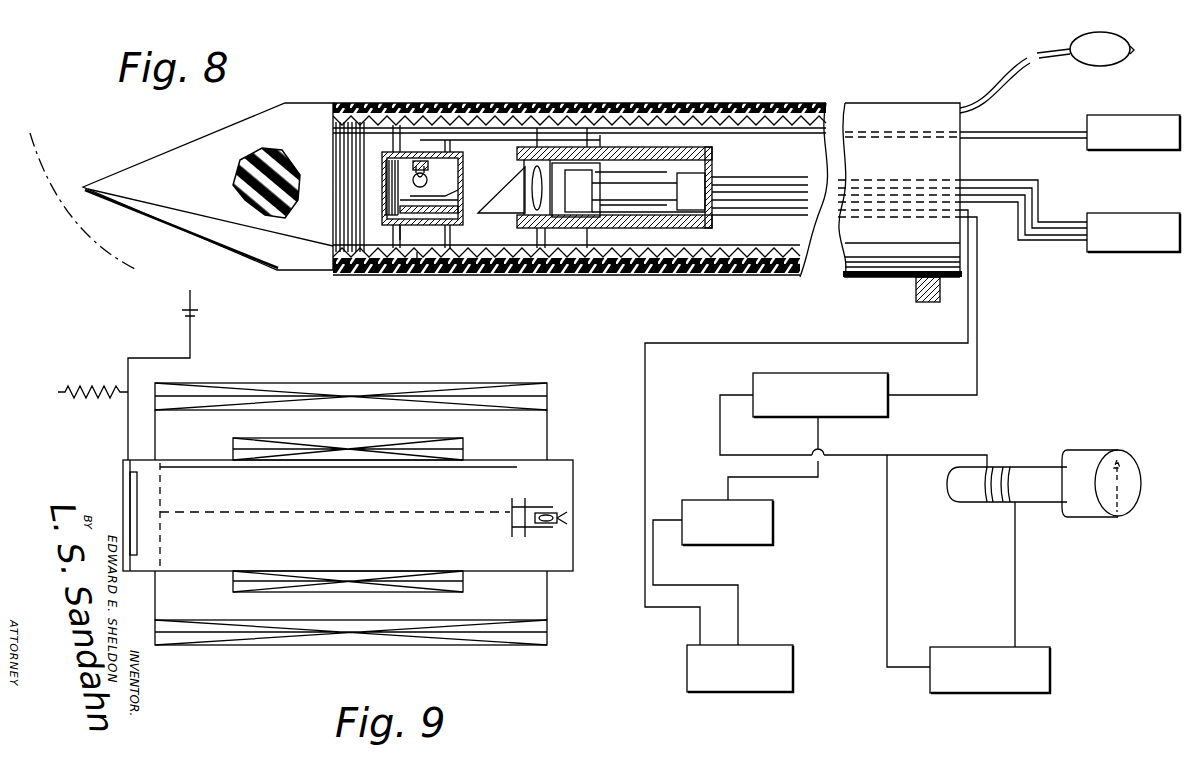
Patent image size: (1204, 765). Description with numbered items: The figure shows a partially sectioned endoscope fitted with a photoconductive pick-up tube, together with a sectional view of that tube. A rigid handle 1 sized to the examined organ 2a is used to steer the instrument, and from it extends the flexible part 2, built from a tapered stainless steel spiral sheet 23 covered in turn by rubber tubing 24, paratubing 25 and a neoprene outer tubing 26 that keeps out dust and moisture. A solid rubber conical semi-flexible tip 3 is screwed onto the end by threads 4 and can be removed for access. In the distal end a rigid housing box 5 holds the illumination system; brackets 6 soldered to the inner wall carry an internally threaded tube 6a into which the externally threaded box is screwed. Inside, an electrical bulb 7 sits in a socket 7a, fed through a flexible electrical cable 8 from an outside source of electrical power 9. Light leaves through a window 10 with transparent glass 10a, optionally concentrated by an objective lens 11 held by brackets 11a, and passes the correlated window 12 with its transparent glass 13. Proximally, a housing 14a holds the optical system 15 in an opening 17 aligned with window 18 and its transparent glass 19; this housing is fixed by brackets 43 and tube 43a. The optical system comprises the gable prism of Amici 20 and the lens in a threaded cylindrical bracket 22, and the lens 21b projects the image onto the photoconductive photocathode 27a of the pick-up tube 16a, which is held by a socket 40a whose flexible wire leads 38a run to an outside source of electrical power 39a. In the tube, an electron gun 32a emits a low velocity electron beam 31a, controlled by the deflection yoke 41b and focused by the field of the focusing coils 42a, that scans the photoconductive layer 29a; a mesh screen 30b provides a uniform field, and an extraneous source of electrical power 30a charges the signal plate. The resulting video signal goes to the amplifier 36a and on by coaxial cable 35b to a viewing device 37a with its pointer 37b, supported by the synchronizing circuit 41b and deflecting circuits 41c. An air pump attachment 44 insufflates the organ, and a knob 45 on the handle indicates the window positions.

In FIG. 8, the handle 1 is at (900, 108).
In FIG. 8, the flexible part 2 is at (686, 101).
In FIG. 8, the examined organ 2a is at (48, 175).
In FIG. 8, the semi-flexible tip 3 is at (238, 243).
In FIG. 8, the threads 4 is at (341, 143).
In FIG. 8, the housing box 5 is at (470, 170).
In FIG. 8, the brackets 6 is at (445, 140).
In FIG. 8, the threaded tube 6a is at (409, 237).
In FIG. 8, the electrical bulb 7 is at (415, 188).
In FIG. 8, the socket 7a is at (413, 171).
In FIG. 8, the flexible electrical cable 8 is at (1022, 136).
In FIG. 8, the source of electrical power 9 is at (1123, 125).
In FIG. 8, the window 10 is at (445, 224).
In FIG. 8, the transparent glass 10a is at (430, 206).
In FIG. 8, the objective lens 11 is at (385, 225).
In FIG. 8, the brackets 11a is at (458, 197).
In FIG. 8, the window 12 is at (418, 273).
In FIG. 8, the transparent glass 13 is at (417, 255).
In FIG. 8, the housing 14a is at (697, 140).
In FIG. 8, the optical system 15 is at (540, 241).
In FIG. 8, the pick-up tube 16a is at (623, 180).
In FIG. 9, the pick-up tube 16a is at (561, 586).
In FIG. 8, the opening 17 is at (512, 170).
In FIG. 8, the window 18 is at (487, 277).
In FIG. 8, the transparent glass 19 is at (513, 273).
In FIG. 8, the gable prism of Amici 20 is at (507, 207).
In FIG. 8, the lens 21b is at (543, 186).
In FIG. 8, the cylindrical bracket 22 is at (578, 148).
In FIG. 8, the stainless steel spiral sheet 23 is at (510, 117).
In FIG. 8, the rubber tubing 24 is at (345, 255).
In FIG. 8, the paratubing 25 is at (354, 273).
In FIG. 8, the outer tubing 26 is at (398, 273).
In FIG. 9, the photoconductive photocathode 27a is at (135, 452).
In FIG. 9, the photoconductive layer 29a is at (137, 542).
In FIG. 9, the extraneous source of electrical power 30a is at (70, 396).
In FIG. 9, the mesh screen 30b is at (163, 487).
In FIG. 9, the electron beam 31a is at (373, 513).
In FIG. 9, the electron gun 32a is at (531, 507).
In FIG. 9, the coaxial cable 35b is at (978, 352).
In FIG. 9, the amplifier 36a is at (820, 383).
In FIG. 9, the indicator meter 37a is at (1117, 483).
In FIG. 9, the meter pointer 37b is at (1109, 458).
In FIG. 8, the flexible wire leads 38a is at (773, 197).
In FIG. 8, the outside source of electrical power 39a is at (1128, 222).
In FIG. 8, the socket 40a is at (695, 188).
In FIG. 9, the deflection yoke 41b is at (383, 442).
In FIG. 9, the deflecting circuits 41c is at (793, 672).
In FIG. 9, the focusing coils 42a is at (408, 390).
In FIG. 8, the brackets 43 is at (535, 168).
In FIG. 8, the tube 43a is at (628, 105).
In FIG. 8, the air pump attachment 44 is at (1112, 45).
In FIG. 8, the knob 45 is at (915, 293).